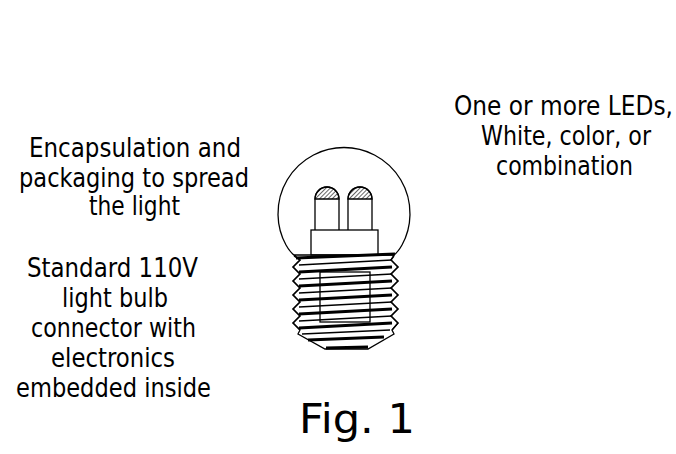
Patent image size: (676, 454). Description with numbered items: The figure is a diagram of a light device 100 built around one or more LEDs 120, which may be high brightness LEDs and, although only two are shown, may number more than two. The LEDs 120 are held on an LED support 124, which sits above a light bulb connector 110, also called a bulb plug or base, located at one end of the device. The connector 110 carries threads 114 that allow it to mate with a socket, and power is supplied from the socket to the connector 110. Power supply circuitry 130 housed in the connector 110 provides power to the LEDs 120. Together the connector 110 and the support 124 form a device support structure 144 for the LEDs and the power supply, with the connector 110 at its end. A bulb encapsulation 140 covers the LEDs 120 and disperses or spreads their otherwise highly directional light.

The light device 100 is at (351, 194).
The bulb encapsulation 140 is at (320, 152).
The LEDs 120 is at (357, 190).
The LED support 124 is at (378, 245).
The light bulb connector 110 is at (295, 272).
The power supply circuitry 130 is at (397, 292).
The threads 114 is at (288, 322).
The device support structure 144 is at (413, 305).